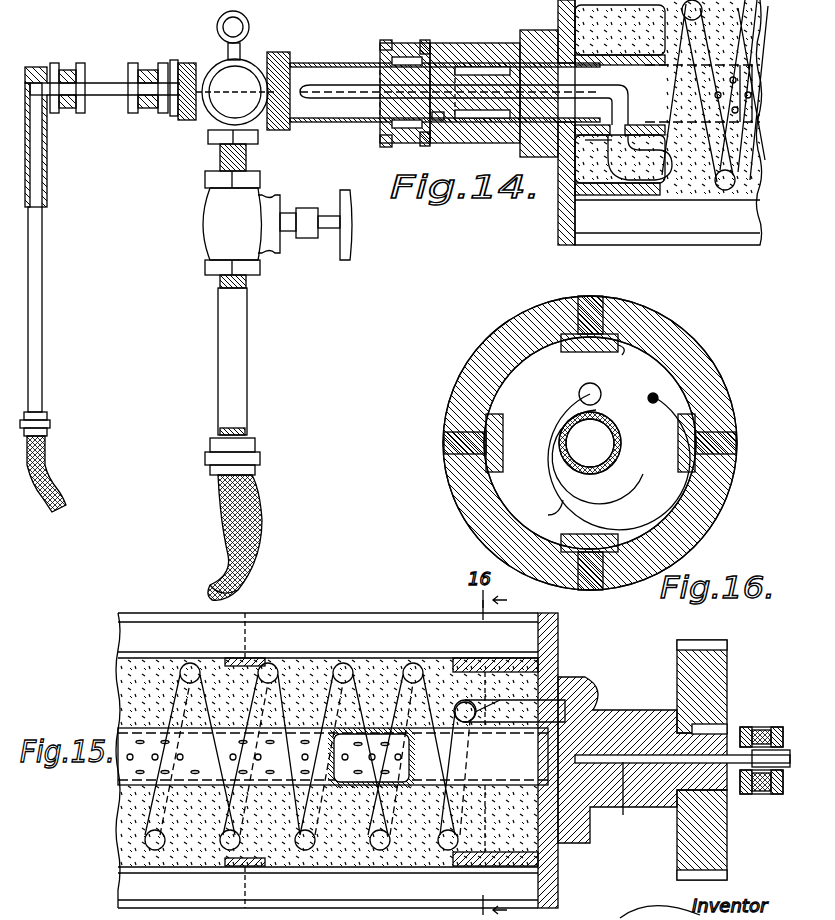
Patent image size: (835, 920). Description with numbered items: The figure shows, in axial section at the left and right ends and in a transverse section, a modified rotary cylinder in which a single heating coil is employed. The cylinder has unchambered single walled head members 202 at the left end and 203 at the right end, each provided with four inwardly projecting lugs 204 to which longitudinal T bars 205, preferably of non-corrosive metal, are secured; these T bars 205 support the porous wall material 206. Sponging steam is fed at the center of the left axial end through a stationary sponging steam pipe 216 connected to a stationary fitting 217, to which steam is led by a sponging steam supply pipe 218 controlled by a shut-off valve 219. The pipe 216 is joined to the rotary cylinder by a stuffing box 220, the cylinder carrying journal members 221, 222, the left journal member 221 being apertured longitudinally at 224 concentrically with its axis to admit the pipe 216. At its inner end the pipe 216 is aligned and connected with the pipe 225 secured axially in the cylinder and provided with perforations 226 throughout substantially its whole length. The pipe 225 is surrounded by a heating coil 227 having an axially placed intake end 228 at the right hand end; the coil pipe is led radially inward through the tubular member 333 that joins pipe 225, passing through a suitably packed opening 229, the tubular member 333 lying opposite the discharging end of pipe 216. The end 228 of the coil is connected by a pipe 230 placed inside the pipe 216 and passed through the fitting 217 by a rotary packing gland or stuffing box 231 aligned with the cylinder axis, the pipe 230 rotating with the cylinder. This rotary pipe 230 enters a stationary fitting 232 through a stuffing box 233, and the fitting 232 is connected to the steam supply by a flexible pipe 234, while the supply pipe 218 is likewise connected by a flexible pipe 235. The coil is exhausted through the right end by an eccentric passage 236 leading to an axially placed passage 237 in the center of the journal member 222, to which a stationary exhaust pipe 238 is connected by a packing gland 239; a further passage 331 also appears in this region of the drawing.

In FIG. 14, the head member 202 is at (557, 233).
In FIG. 15, the head member 203 is at (560, 648).
In FIG. 16, the inwardly projecting lugs 204 is at (624, 348).
In FIG. 15, the inwardly projecting lugs 204 is at (462, 658).
In FIG. 16, the T bars 205 is at (595, 340).
In FIG. 15, the T bars 205 is at (278, 628).
In FIG. 16, the porous wall material 206 is at (678, 345).
In FIG. 14, the sponging steam pipe 216 is at (305, 68).
In FIG. 14, the stationary fitting 217 is at (256, 62).
In FIG. 14, the sponging steam supply pipe 218 is at (232, 343).
In FIG. 14, the shut-off valve 219 is at (212, 237).
In FIG. 14, the stuffing box 220 is at (385, 42).
In FIG. 14, the journal member 221 is at (460, 42).
In FIG. 15, the journal member 222 is at (612, 720).
In FIG. 14, the aperture 224 is at (442, 122).
In FIG. 14, the perforated pipe 225 is at (665, 63).
In FIG. 16, the perforated pipe 225 is at (620, 460).
In FIG. 15, the perforated pipe 225 is at (375, 728).
In FIG. 14, the perforations 226 is at (735, 65).
In FIG. 16, the perforations 226 is at (598, 410).
In FIG. 15, the perforations 226 is at (345, 720).
In FIG. 14, the heating coil 227 is at (728, 180).
In FIG. 16, the heating coil 227 is at (555, 510).
In FIG. 15, the heating coil 227 is at (160, 675).
In FIG. 14, the intake end of heating coil 228 is at (630, 92).
In FIG. 14, the packed opening 229 is at (612, 135).
In FIG. 14, the rotary pipe 230 is at (350, 100).
In FIG. 14, the rotary packing gland 231 is at (142, 62).
In FIG. 14, the stationary fitting 232 is at (48, 152).
In FIG. 14, the stuffing box 233 is at (82, 63).
In FIG. 14, the flexible pipe 234 is at (48, 470).
In FIG. 14, the flexible pipe 235 is at (255, 512).
In FIG. 15, the eccentric passage 236 is at (600, 703).
In FIG. 15, the axial passage 237 is at (623, 816).
In FIG. 15, the exhaust pipe 238 is at (782, 727).
In FIG. 15, the packing gland 239 is at (763, 795).
In FIG. 15, the passage 331 is at (509, 711).
In FIG. 14, the tubular member 333 is at (625, 62).